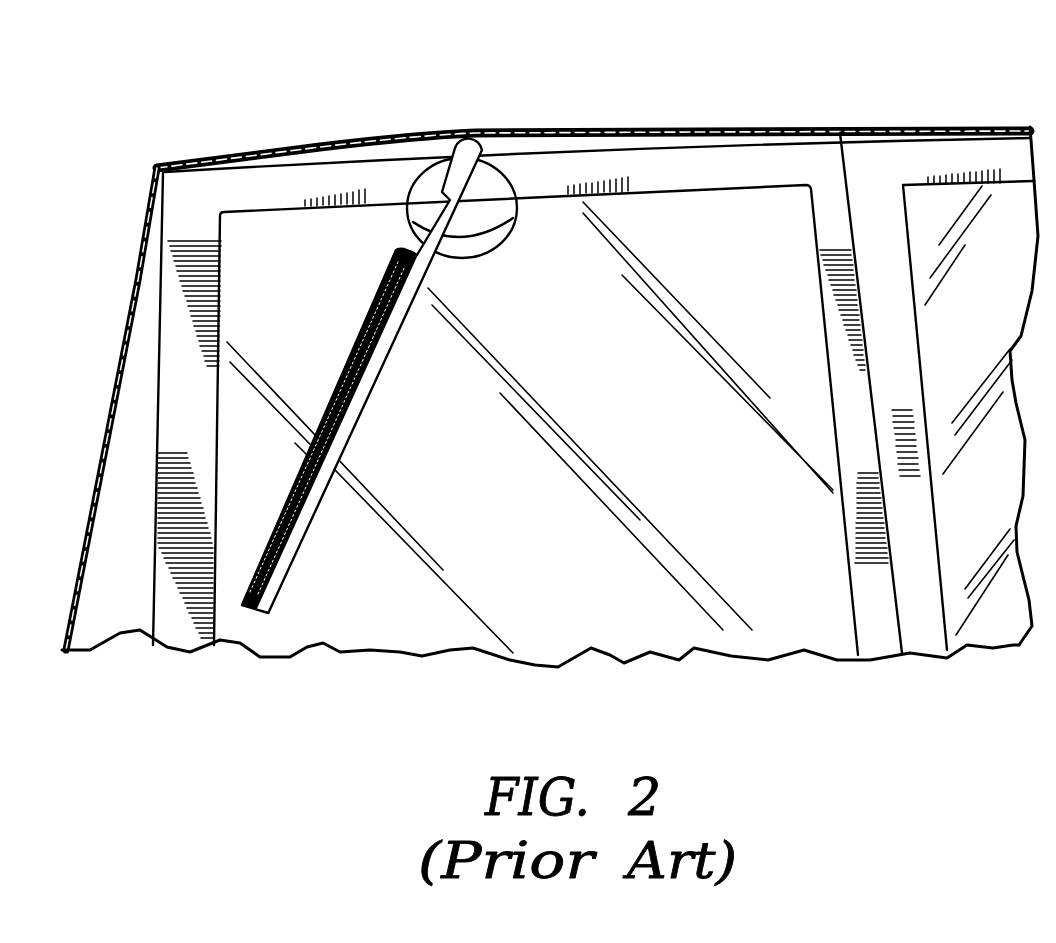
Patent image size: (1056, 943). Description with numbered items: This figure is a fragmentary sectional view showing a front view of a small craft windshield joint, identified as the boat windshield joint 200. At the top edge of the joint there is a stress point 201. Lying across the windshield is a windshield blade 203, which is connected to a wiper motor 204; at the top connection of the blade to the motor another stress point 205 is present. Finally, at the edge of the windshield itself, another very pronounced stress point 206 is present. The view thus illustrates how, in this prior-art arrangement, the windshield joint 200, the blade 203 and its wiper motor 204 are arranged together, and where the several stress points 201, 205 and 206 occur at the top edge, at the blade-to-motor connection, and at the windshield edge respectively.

The boat windshield joint 200 is at (832, 332).
The stress point 201 is at (840, 130).
The windshield blade 203 is at (347, 398).
The wiper motor 204 is at (480, 221).
The stress point 205 is at (470, 129).
The stress point 206 is at (150, 146).